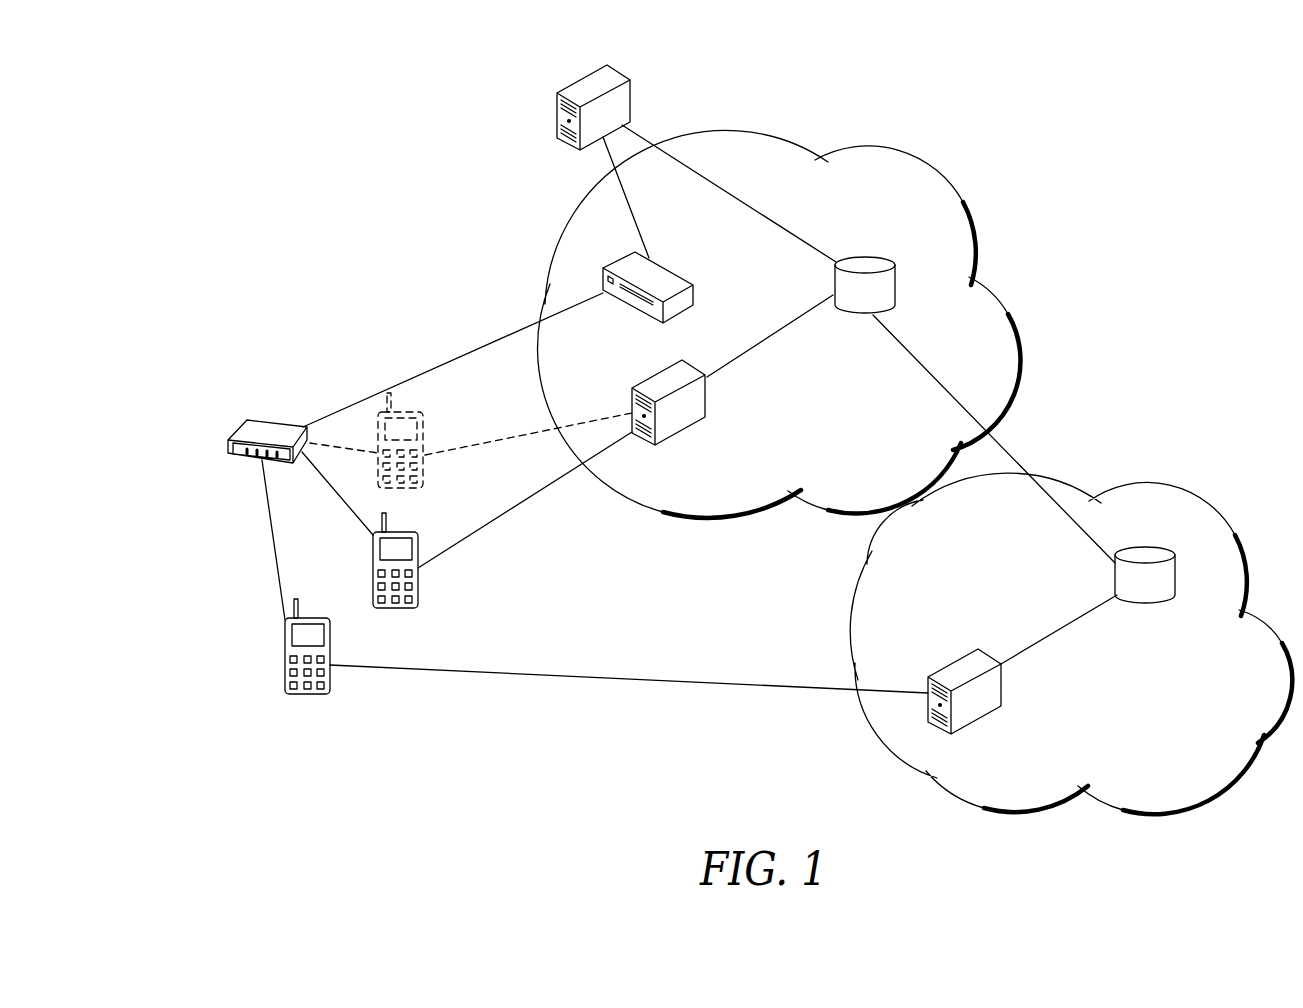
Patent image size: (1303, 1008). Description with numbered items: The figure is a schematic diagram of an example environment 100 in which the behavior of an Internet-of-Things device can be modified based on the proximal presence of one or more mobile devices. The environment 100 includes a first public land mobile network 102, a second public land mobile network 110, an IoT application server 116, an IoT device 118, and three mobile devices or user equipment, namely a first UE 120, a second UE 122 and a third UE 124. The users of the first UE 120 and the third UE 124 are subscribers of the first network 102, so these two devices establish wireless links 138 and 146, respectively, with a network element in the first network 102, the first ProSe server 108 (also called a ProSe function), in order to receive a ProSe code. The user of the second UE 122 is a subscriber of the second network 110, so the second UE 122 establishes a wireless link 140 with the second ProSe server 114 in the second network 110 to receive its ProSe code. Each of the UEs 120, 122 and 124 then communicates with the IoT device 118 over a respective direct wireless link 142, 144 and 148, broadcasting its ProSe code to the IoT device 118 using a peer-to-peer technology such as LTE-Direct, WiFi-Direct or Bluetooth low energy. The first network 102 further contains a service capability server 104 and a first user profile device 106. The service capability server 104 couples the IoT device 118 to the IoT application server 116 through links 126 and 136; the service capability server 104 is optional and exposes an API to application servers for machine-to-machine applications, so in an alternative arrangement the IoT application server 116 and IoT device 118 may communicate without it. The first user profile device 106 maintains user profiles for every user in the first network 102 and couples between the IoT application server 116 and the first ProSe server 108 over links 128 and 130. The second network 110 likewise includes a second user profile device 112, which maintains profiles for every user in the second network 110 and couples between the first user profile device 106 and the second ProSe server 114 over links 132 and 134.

The environment 100 is at (1177, 124).
The public land mobile network PLMN-1 102 is at (935, 168).
The service capability server (SCS) 104 is at (673, 270).
The user profile device 1 106 is at (897, 283).
The ProSe server 1 108 is at (652, 378).
The public land mobile network PLMN-2 110 is at (1180, 483).
The user profile device 2 112 is at (1150, 549).
The ProSe server 2 114 is at (952, 664).
The IoT AS 116 is at (602, 68).
The IoT device 118 is at (255, 420).
The UE-1 120 is at (373, 573).
The UE-2 122 is at (285, 660).
The UE-3 124 is at (426, 472).
The link 126 is at (607, 155).
The link 128 is at (647, 135).
The link 130 is at (776, 328).
The link 132 is at (997, 440).
The link 134 is at (1062, 626).
The link 136 is at (466, 340).
The wireless link 138 is at (513, 522).
The wireless link 140 is at (649, 683).
The wireless link 142 is at (328, 488).
The wireless link 144 is at (270, 524).
The wireless link 146 is at (489, 440).
The wireless link 148 is at (346, 448).